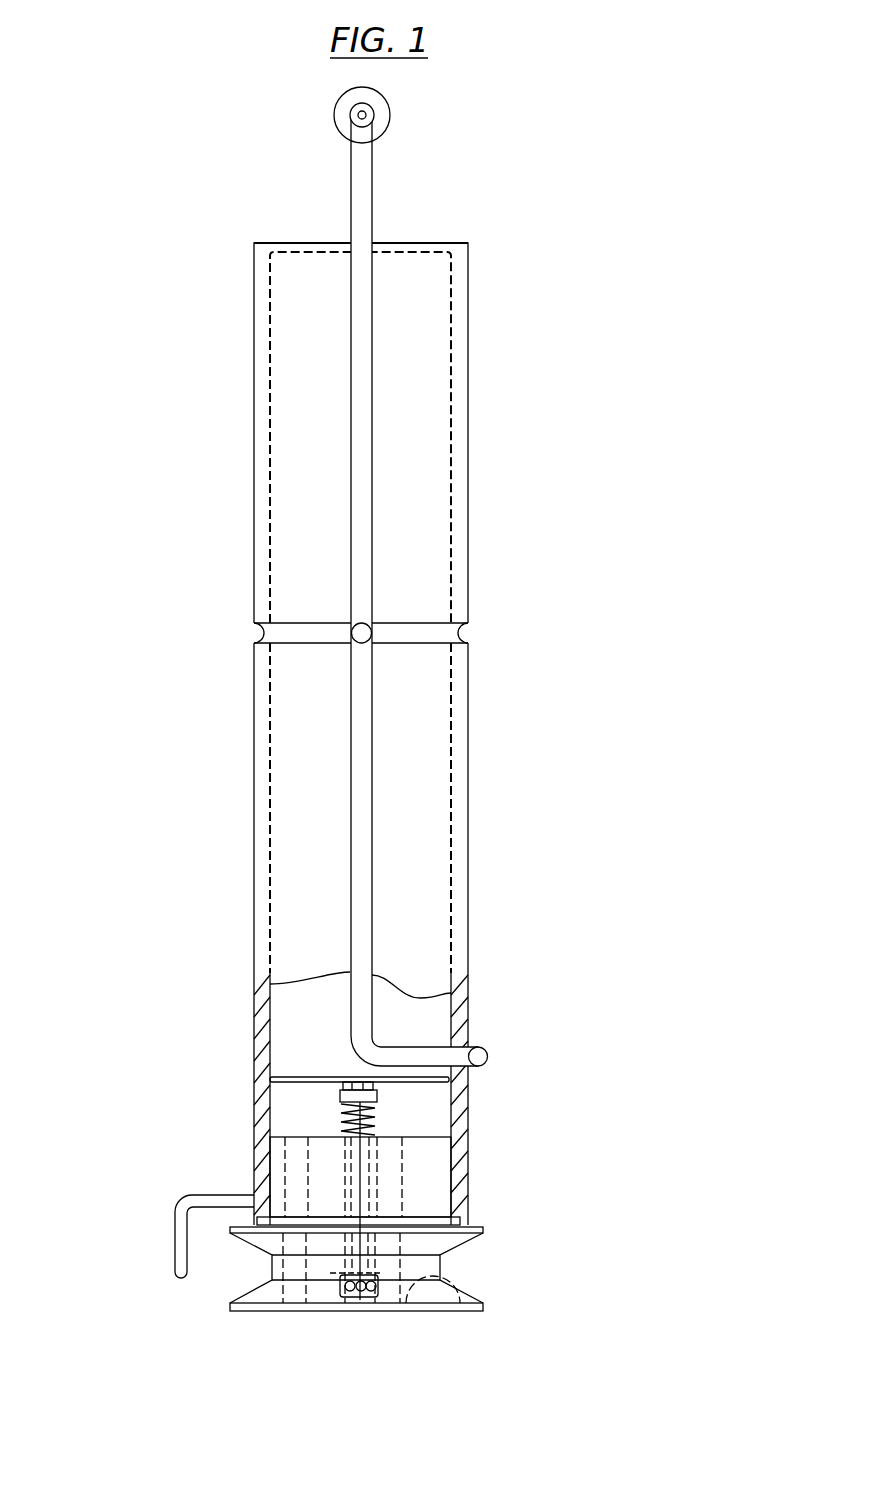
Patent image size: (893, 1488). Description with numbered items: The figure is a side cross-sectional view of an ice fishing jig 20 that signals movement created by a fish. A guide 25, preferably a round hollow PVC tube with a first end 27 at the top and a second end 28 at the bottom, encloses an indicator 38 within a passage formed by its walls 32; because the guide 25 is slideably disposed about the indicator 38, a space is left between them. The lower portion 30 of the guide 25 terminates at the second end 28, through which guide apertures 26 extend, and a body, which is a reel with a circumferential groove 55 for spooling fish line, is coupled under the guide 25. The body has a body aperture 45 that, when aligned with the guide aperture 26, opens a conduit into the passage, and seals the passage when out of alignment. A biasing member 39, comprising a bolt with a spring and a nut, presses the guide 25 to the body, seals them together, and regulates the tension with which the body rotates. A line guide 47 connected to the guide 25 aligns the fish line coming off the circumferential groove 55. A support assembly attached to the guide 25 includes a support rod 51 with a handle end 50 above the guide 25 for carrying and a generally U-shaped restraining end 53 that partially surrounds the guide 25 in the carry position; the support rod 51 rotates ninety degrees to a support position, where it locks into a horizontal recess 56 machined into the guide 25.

The ice fishing jig 20 is at (240, 390).
The guide 25 is at (468, 448).
The guide aperture 26 is at (293, 1165).
The first end 27 is at (253, 268).
The second end 28 is at (463, 1162).
The lower portion 30 is at (468, 875).
The walls 32 is at (468, 268).
The indicator 38 is at (282, 1020).
The biasing member 39 is at (373, 1113).
The body aperture 45 is at (292, 1272).
The line guide 47 is at (172, 1243).
The handle end 50 is at (388, 110).
The support rod 51 is at (372, 200).
The restraining end 53 is at (488, 1050).
The circumferential groove 55 is at (440, 1268).
The horizontal recess 56 is at (461, 633).